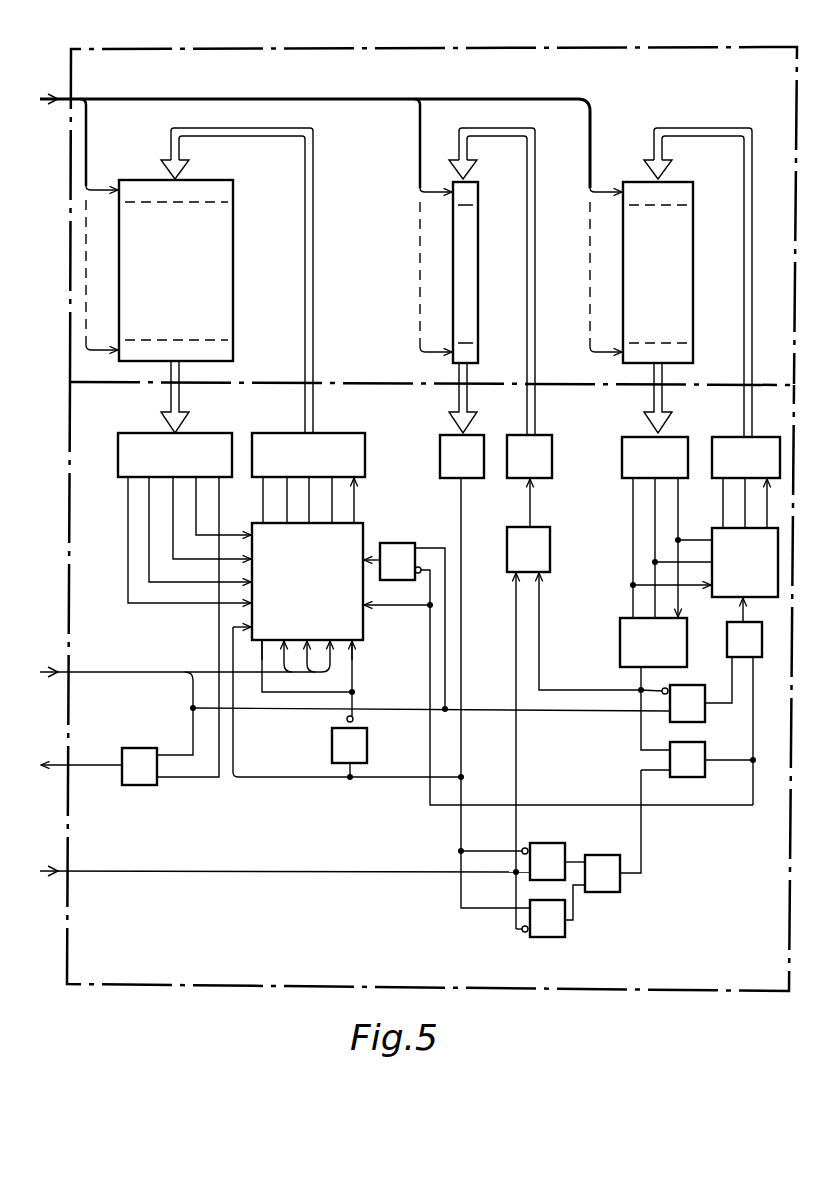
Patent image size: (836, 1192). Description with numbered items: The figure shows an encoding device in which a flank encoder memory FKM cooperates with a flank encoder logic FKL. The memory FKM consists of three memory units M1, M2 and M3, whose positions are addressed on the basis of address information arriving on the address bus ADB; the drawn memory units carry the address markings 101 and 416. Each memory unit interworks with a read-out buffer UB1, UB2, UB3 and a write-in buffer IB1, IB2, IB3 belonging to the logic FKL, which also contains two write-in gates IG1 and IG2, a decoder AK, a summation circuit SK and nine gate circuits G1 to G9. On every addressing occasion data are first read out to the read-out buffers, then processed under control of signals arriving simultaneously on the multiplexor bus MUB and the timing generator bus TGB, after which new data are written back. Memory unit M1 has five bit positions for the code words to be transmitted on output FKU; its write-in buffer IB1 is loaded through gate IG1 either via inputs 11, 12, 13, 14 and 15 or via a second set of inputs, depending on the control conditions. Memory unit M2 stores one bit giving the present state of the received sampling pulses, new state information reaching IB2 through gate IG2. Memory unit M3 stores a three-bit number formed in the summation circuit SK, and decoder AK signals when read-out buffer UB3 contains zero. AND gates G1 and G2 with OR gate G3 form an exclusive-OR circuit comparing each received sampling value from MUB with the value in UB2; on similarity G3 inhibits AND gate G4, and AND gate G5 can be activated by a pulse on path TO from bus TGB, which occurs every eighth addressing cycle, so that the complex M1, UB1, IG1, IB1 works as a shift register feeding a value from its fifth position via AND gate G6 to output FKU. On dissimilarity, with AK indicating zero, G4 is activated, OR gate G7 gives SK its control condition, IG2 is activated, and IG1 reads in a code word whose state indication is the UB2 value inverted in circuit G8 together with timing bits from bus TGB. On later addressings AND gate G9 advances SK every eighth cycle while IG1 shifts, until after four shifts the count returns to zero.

The flank encoder memory FKM is at (716, 48).
The flank encoder logic FKL is at (667, 992).
The address bus ADB is at (309, 207).
The first memory address 101 is at (357, 177).
The last memory address 416 is at (354, 340).
The memory unit M1 is at (241, 238).
The memory unit M2 is at (486, 238).
The memory unit M3 is at (693, 243).
The read-out buffer UB1 is at (117, 435).
The write-in buffer IB1 is at (280, 425).
The read-out buffer UB2 is at (439, 437).
The write-in buffer IB2 is at (551, 436).
The read-out buffer UB3 is at (622, 458).
The write-in buffer IB3 is at (728, 437).
The write-in gate IG1 is at (366, 534).
The write-in gate IG2 is at (552, 544).
The summation circuit SK is at (713, 528).
The decoder AK is at (619, 647).
The AND gate G1 is at (548, 843).
The AND gate G2 is at (565, 936).
The OR gate G3 is at (598, 855).
The AND gate G4 is at (704, 775).
The AND gate G5 is at (410, 546).
The AND gate G6 is at (123, 748).
The OR gate G7 is at (762, 652).
The inverting circuit G8 is at (368, 737).
The AND gate G9 is at (704, 715).
The timing generator bus TGB is at (59, 668).
The timing path TO is at (192, 690).
The output FKU is at (58, 762).
The multiplexor bus MUB is at (58, 863).
The input 11 is at (347, 702).
The input 12 is at (189, 540).
The input 13 is at (200, 529).
The input 14 is at (212, 518).
The input 15 is at (223, 506).